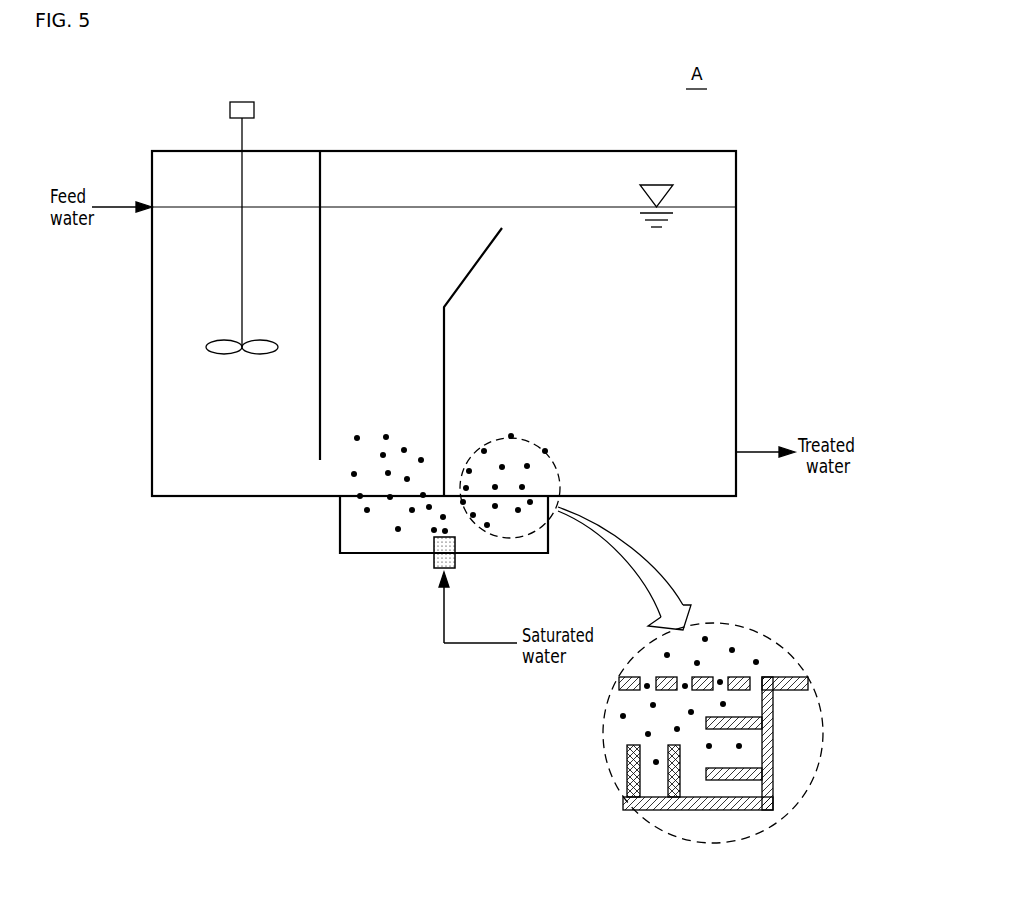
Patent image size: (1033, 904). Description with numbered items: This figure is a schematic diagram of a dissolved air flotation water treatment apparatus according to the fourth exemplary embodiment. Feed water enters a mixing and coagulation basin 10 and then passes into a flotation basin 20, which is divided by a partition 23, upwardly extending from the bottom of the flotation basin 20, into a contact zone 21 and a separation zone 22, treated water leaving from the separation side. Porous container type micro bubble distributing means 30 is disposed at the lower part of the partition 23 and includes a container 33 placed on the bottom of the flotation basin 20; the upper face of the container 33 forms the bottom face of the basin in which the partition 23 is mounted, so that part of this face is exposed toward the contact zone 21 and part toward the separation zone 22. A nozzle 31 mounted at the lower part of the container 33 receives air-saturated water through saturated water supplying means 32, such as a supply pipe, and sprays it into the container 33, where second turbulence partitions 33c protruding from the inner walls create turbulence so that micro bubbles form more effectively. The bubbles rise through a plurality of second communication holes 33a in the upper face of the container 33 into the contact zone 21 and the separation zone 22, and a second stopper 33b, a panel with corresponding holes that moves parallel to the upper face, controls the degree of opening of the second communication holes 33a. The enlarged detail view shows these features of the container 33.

The mixing and coagulation basin 10 is at (290, 255).
The flotation basin 20 is at (788, 678).
The contact zone 21 is at (406, 276).
The separation zone 22 is at (554, 277).
The partition 23 is at (445, 336).
The micro bubble distributing means 30 is at (556, 653).
The nozzle 31 is at (434, 562).
The saturated water supplying means 32 is at (455, 645).
The container 33 is at (340, 553).
The second communication holes 33a is at (654, 695).
The second stopper 33b is at (742, 677).
The second turbulence partitions 33c is at (627, 770).